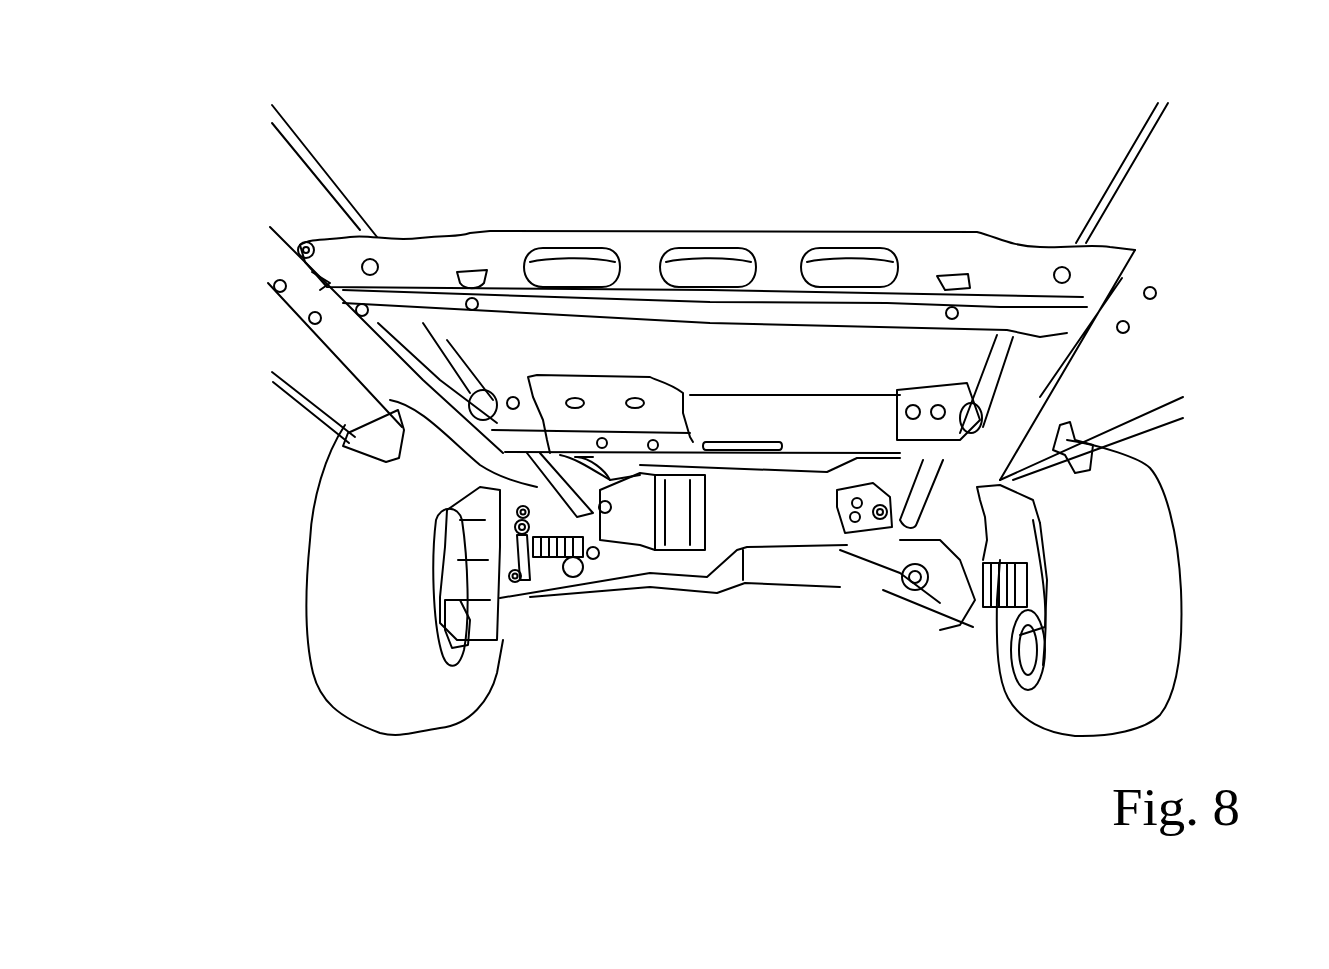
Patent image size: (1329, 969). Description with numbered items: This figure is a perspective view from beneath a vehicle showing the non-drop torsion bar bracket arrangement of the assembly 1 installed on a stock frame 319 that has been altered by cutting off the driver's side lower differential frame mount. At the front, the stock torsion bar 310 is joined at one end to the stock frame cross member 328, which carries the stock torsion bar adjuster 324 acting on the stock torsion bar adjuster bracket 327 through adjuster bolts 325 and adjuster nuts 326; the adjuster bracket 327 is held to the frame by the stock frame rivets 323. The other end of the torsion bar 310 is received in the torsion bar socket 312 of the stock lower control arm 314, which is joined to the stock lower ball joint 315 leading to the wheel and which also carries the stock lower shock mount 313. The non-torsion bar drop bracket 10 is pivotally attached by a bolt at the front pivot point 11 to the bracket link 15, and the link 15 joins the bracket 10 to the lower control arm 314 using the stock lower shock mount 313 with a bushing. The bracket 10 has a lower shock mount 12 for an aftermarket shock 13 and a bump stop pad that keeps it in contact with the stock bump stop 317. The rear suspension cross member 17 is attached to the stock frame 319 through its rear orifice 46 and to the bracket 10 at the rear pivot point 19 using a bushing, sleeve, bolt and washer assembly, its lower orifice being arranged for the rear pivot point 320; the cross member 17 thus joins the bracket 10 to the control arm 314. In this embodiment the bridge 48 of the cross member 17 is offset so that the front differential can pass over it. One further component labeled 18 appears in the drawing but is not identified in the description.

The assembly 1 is at (755, 588).
The non-torsion bar drop bracket 10 is at (940, 540).
The front pivot point 11 is at (522, 527).
The lower shock mount 12 is at (523, 514).
The aftermarket shock 13 is at (537, 487).
The bracket link 15 is at (938, 540).
The rear suspension cross member 17 is at (782, 535).
The drive shaft boot 18 is at (987, 512).
The rear pivot point 19 is at (880, 512).
The rear orifice 46 is at (657, 553).
The bridge 48 is at (703, 580).
The stock torsion bar 310 is at (995, 385).
The torsion bar socket 312 is at (915, 580).
The stock lower shock mount 313 is at (515, 578).
The stock lower control arm 314 is at (537, 582).
The stock lower ball joint 315 is at (466, 620).
The stock bump stop 317 is at (935, 510).
The stock frame 319 is at (1180, 247).
The rear pivot point 320 is at (593, 553).
The stock frame rivets 323 is at (1153, 295).
The stock torsion bar adjuster 324 is at (308, 245).
The adjuster bolts 325 is at (472, 305).
The adjuster nuts 326 is at (463, 272).
The stock torsion bar adjuster bracket 327 is at (644, 246).
The stock frame cross member 328 is at (845, 412).